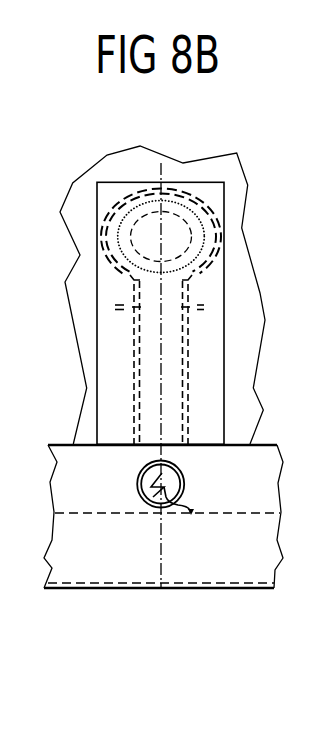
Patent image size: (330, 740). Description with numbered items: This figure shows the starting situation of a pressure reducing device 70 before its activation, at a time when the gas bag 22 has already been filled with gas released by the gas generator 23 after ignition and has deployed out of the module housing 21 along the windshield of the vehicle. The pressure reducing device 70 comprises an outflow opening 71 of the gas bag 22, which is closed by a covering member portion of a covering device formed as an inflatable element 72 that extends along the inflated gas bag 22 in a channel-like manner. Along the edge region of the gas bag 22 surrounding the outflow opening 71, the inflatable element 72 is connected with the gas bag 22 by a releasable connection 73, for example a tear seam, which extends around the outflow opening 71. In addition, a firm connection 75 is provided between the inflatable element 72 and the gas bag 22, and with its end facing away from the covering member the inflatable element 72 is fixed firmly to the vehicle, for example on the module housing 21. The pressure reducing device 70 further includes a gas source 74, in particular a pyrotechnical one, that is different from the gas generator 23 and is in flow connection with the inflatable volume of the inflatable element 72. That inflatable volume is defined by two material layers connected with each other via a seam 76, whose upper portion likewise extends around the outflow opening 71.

The gas bag 22 is at (118, 168).
The pressure reducing device 70 is at (214, 389).
The outflow opening 71 is at (178, 230).
The releasable connection 73 is at (205, 243).
The inflatable element 72 is at (213, 307).
The seam 76 is at (183, 360).
The firm connection 75 is at (122, 307).
The module housing 21 is at (209, 589).
The gas generator 23 is at (88, 575).
The gas source 74 is at (172, 480).